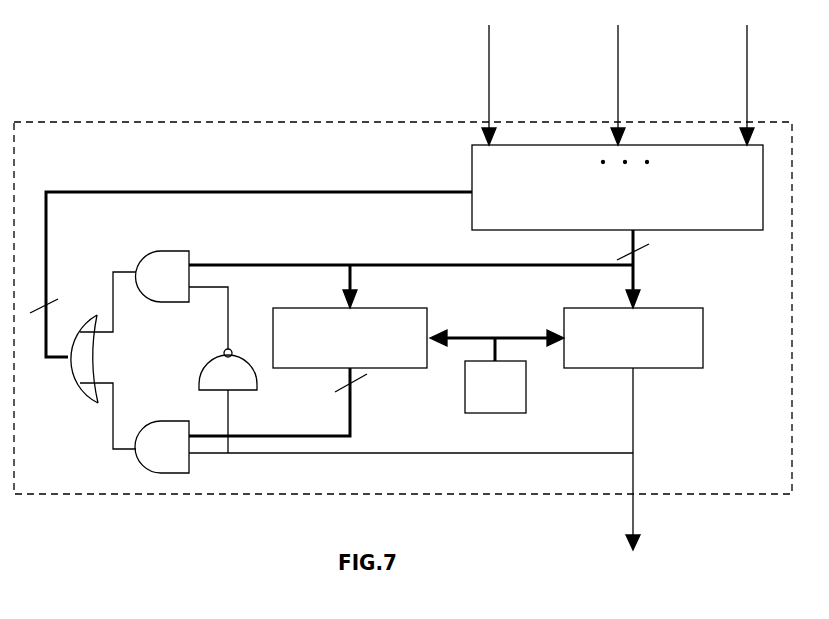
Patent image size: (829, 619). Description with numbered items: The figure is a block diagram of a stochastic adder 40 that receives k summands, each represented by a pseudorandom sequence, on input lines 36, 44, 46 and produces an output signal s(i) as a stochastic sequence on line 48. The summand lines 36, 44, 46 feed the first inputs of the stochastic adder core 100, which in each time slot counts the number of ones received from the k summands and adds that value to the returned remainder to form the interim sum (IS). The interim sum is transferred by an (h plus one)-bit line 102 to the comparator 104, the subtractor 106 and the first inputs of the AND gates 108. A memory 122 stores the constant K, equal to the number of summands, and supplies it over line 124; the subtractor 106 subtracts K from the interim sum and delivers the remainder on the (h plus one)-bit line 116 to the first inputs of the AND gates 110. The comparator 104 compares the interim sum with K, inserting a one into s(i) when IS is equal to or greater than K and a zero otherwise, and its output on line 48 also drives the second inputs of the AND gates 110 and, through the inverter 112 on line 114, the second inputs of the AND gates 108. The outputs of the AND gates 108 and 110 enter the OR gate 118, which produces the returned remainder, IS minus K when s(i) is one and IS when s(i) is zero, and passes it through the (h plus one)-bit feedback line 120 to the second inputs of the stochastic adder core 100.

The stochastic adder 40 is at (243, 138).
The stochastic adder core 100 is at (485, 168).
The line 46 is at (486, 90).
The line 36 is at (616, 90).
The line 44 is at (745, 90).
The feedback line 120 is at (137, 192).
The OR gate 118 is at (90, 390).
The AND gates 108 is at (163, 254).
The (h+1)-bit line 102 is at (455, 265).
The line 114 is at (228, 330).
The inverter 112 is at (242, 377).
The AND gates 110 is at (172, 462).
The (h+1)-bit line 116 is at (352, 403).
The subtractor 106 is at (310, 330).
The comparator 104 is at (660, 320).
The line 124 is at (455, 336).
The memory 122 is at (520, 386).
The line 48 is at (628, 518).